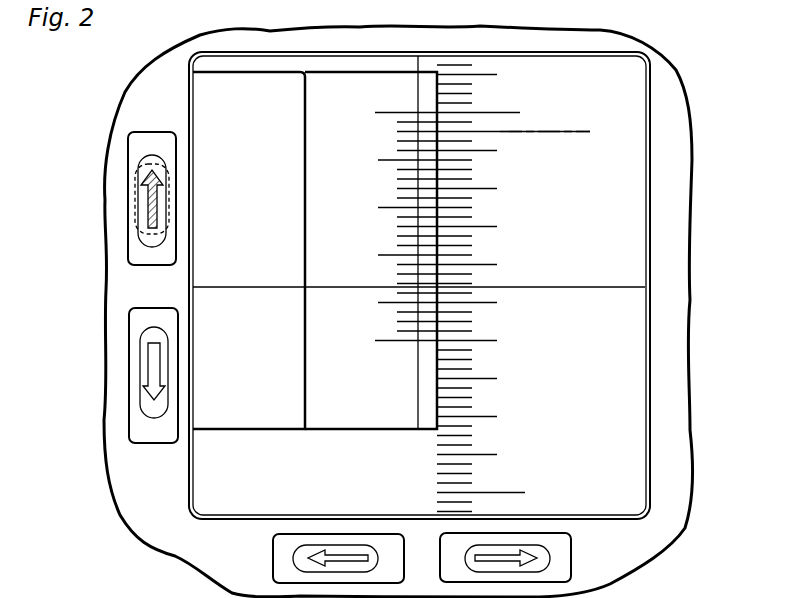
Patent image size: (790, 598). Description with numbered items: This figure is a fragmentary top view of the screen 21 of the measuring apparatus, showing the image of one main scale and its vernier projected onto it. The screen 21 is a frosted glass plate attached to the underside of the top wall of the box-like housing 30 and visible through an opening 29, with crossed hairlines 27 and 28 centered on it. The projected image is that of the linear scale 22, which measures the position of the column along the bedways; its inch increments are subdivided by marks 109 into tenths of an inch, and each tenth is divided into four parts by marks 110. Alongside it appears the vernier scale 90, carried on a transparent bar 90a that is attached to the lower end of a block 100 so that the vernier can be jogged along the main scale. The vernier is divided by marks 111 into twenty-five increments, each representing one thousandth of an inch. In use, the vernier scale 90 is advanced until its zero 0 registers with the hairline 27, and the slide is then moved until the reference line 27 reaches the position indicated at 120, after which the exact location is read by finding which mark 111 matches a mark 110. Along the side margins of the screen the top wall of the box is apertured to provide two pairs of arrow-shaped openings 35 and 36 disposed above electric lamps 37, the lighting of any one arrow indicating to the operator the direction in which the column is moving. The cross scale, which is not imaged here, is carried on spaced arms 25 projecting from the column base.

The screen 21 is at (605, 440).
The linear scale 22 is at (529, 91).
The spaced arms 25 is at (471, 284).
The hairline 27 is at (567, 286).
The hairline 28 is at (418, 395).
The opening 29 is at (653, 208).
The housing 30 is at (683, 378).
The arrow-shaped openings 35 is at (152, 208).
The arrow-shaped openings 36 is at (360, 562).
The electric lamps 37 is at (135, 189).
The vernier scale 90 is at (366, 300).
The bar carrying the vernier scale 90a is at (358, 429).
The block 100 is at (274, 429).
The marks 109 is at (490, 342).
The marks 110 is at (470, 392).
The marks 111 is at (398, 172).
The position 120 is at (508, 133).
The zero mark 0 is at (366, 340).